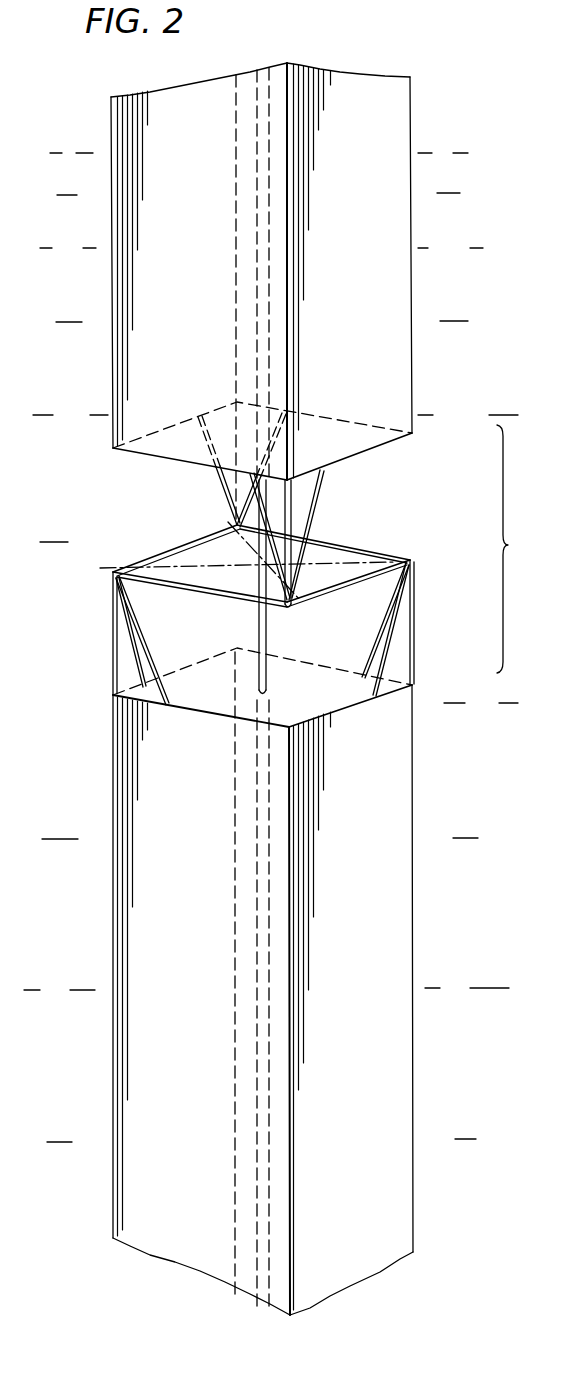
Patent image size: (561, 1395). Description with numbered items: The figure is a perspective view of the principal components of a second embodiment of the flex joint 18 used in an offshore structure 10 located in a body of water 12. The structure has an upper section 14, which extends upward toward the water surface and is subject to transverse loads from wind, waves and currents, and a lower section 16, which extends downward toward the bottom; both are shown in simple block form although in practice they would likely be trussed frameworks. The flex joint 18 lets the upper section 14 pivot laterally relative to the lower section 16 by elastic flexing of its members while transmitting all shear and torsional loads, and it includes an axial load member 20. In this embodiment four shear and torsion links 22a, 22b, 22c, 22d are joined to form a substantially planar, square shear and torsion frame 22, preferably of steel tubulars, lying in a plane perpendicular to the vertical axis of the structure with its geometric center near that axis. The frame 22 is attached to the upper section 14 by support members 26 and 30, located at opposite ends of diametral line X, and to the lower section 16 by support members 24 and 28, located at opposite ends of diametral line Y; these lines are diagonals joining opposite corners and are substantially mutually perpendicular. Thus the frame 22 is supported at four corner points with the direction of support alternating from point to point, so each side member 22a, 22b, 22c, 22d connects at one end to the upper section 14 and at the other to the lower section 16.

The offshore structure 10 is at (448, 376).
The body of water 12 is at (78, 452).
The upper section 14 is at (412, 282).
The lower section 16 is at (413, 917).
The flex joint 18 is at (518, 549).
The axial load member 20 is at (268, 682).
The shear and torsion frame 22 is at (281, 561).
The shear and torsion link 22a is at (387, 580).
The shear and torsion link 22b is at (342, 543).
The shear and torsion link 22c is at (152, 569).
The shear and torsion link 22d is at (190, 593).
The support member 24 is at (106, 611).
The support member 26 is at (222, 511).
The support member 28 is at (414, 607).
The support member 30 is at (307, 586).
The diametral line X is at (280, 610).
The diametral line Y is at (143, 564).